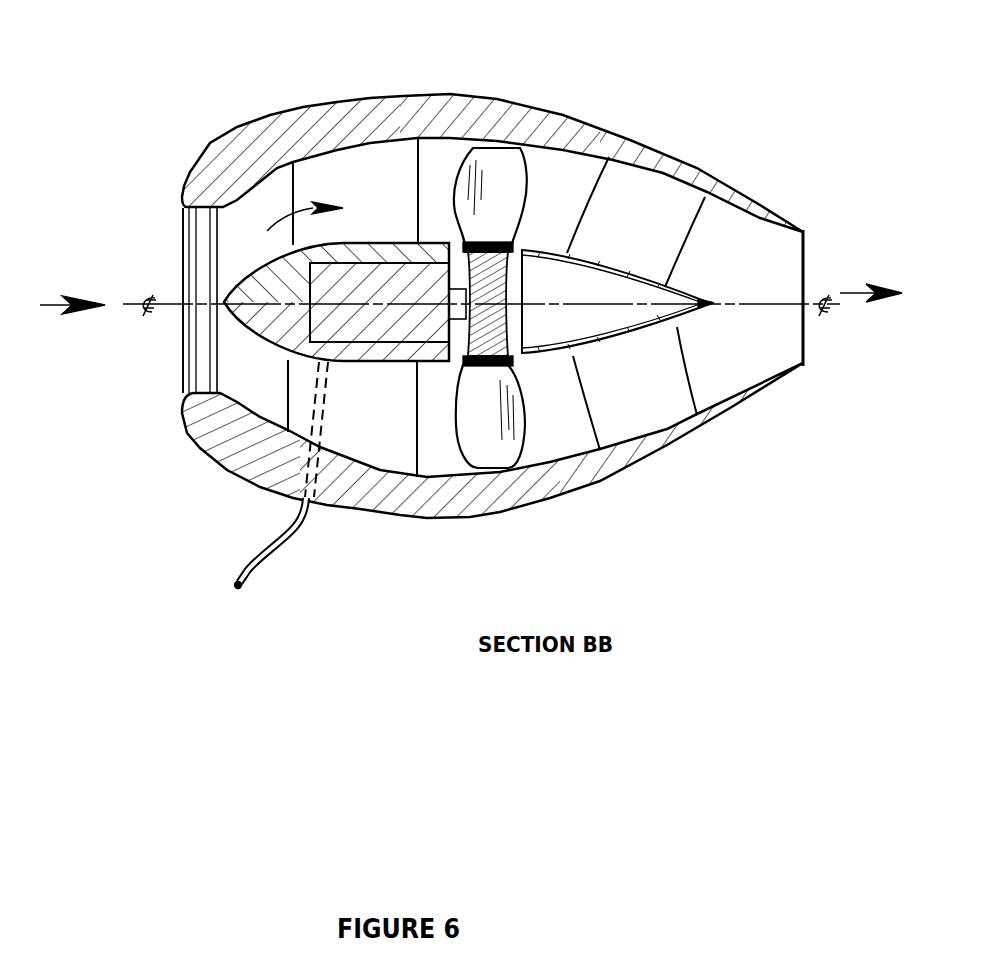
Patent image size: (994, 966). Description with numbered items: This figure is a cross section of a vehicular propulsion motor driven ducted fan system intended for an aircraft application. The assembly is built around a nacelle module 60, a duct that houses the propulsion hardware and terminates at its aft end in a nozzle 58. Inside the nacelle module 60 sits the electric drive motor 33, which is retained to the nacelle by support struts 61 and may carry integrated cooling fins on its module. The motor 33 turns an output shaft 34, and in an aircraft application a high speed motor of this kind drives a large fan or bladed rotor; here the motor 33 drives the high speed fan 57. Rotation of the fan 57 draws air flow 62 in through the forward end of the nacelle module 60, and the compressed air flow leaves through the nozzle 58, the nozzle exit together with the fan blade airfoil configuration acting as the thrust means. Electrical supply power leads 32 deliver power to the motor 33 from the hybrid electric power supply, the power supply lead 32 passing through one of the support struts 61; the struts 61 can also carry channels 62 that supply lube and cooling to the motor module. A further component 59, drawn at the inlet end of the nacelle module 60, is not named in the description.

The nacelle module 60 is at (822, 195).
The air flow 62 is at (273, 221).
The inlet screen 59 is at (203, 327).
The motor 33 is at (310, 342).
The output shaft 34 is at (458, 318).
The fan 57 is at (488, 432).
The support struts 61 is at (303, 413).
The electrical supply power leads 32 is at (237, 573).
The nozzle 58 is at (800, 318).